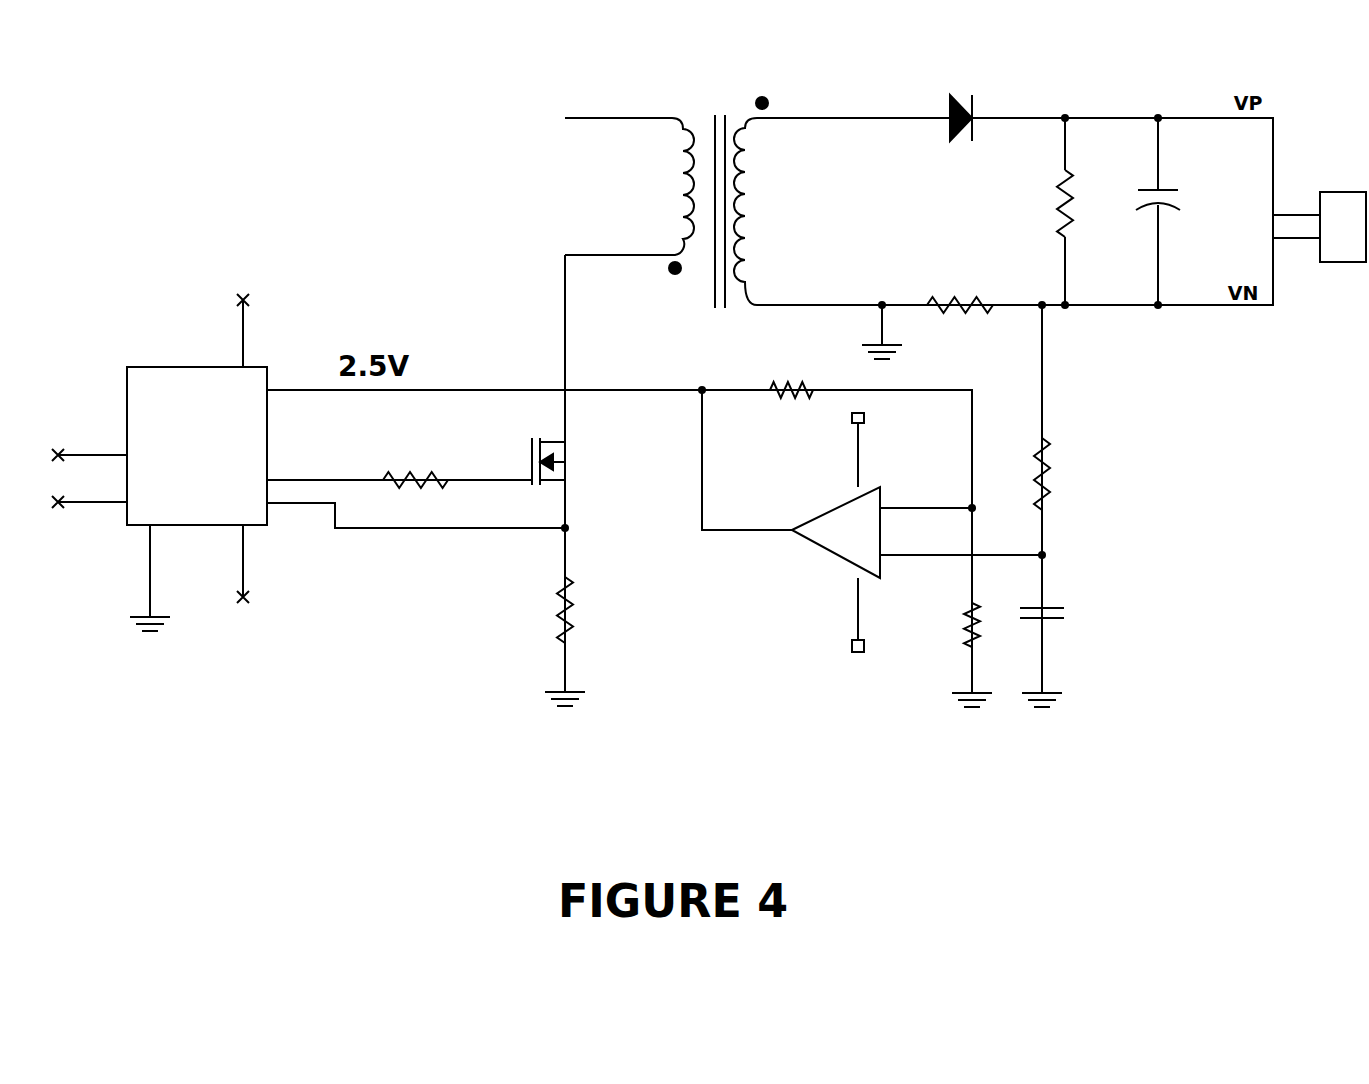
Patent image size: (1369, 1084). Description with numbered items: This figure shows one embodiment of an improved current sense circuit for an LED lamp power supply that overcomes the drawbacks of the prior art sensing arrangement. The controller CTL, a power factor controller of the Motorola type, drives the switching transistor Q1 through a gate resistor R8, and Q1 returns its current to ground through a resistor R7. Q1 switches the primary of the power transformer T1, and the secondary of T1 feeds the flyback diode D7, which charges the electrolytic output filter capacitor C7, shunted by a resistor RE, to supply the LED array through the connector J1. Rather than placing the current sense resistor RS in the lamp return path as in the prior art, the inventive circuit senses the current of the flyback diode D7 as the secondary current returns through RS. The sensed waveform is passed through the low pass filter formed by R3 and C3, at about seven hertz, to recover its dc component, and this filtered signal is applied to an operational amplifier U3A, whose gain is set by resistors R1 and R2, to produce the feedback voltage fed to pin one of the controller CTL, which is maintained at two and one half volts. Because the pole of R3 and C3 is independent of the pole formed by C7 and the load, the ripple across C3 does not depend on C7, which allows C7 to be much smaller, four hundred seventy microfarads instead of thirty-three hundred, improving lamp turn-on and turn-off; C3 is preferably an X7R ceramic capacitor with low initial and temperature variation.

The controller CTL is at (174, 455).
The resistor R8 is at (415, 462).
The switching transistor Q1 is at (572, 461).
The resistor R7 is at (592, 610).
The power transformer T1 is at (691, 191).
The flyback diode D7 is at (963, 106).
The resistor RE is at (1090, 211).
The output filter capacitor C7 is at (1200, 211).
The connector J1 is at (1343, 213).
The current sense resistor RS is at (952, 274).
The resistor R1 is at (790, 376).
The operational amplifier U3A is at (829, 532).
The resistor R2 is at (947, 625).
The low pass filter resistor R3 is at (1075, 474).
The low pass filter capacitor C3 is at (1070, 603).